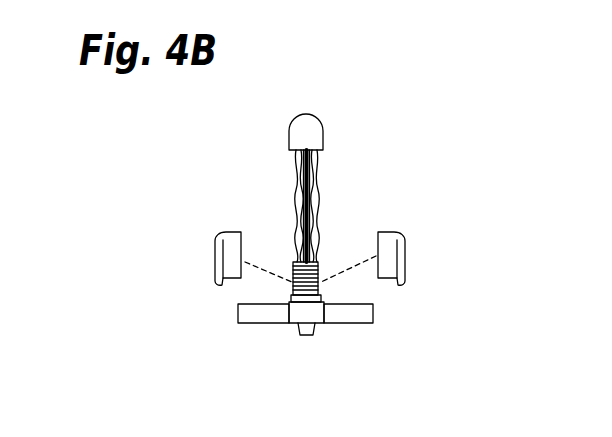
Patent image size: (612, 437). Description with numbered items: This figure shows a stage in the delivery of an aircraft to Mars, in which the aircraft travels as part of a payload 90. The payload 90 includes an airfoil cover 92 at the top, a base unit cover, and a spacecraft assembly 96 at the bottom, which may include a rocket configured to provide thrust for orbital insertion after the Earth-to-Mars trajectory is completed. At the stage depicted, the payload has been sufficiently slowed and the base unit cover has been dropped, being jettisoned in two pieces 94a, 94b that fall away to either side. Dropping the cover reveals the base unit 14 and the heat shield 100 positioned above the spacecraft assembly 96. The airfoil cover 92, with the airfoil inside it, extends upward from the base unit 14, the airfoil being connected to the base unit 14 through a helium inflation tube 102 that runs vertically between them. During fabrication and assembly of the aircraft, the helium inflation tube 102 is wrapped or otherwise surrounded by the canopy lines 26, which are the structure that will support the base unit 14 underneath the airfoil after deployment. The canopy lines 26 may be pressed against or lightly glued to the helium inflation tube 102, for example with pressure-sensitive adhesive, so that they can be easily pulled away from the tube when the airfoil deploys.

The payload 90 is at (268, 219).
The airfoil cover 92 is at (308, 112).
The canopy lines 26 is at (296, 166).
The helium inflation tube 102 is at (312, 190).
The base unit 14 is at (318, 266).
The heat shield 100 is at (323, 299).
The spacecraft assembly 96 is at (316, 326).
The base unit cover piece 94a is at (214, 261).
The base unit cover piece 94b is at (406, 256).